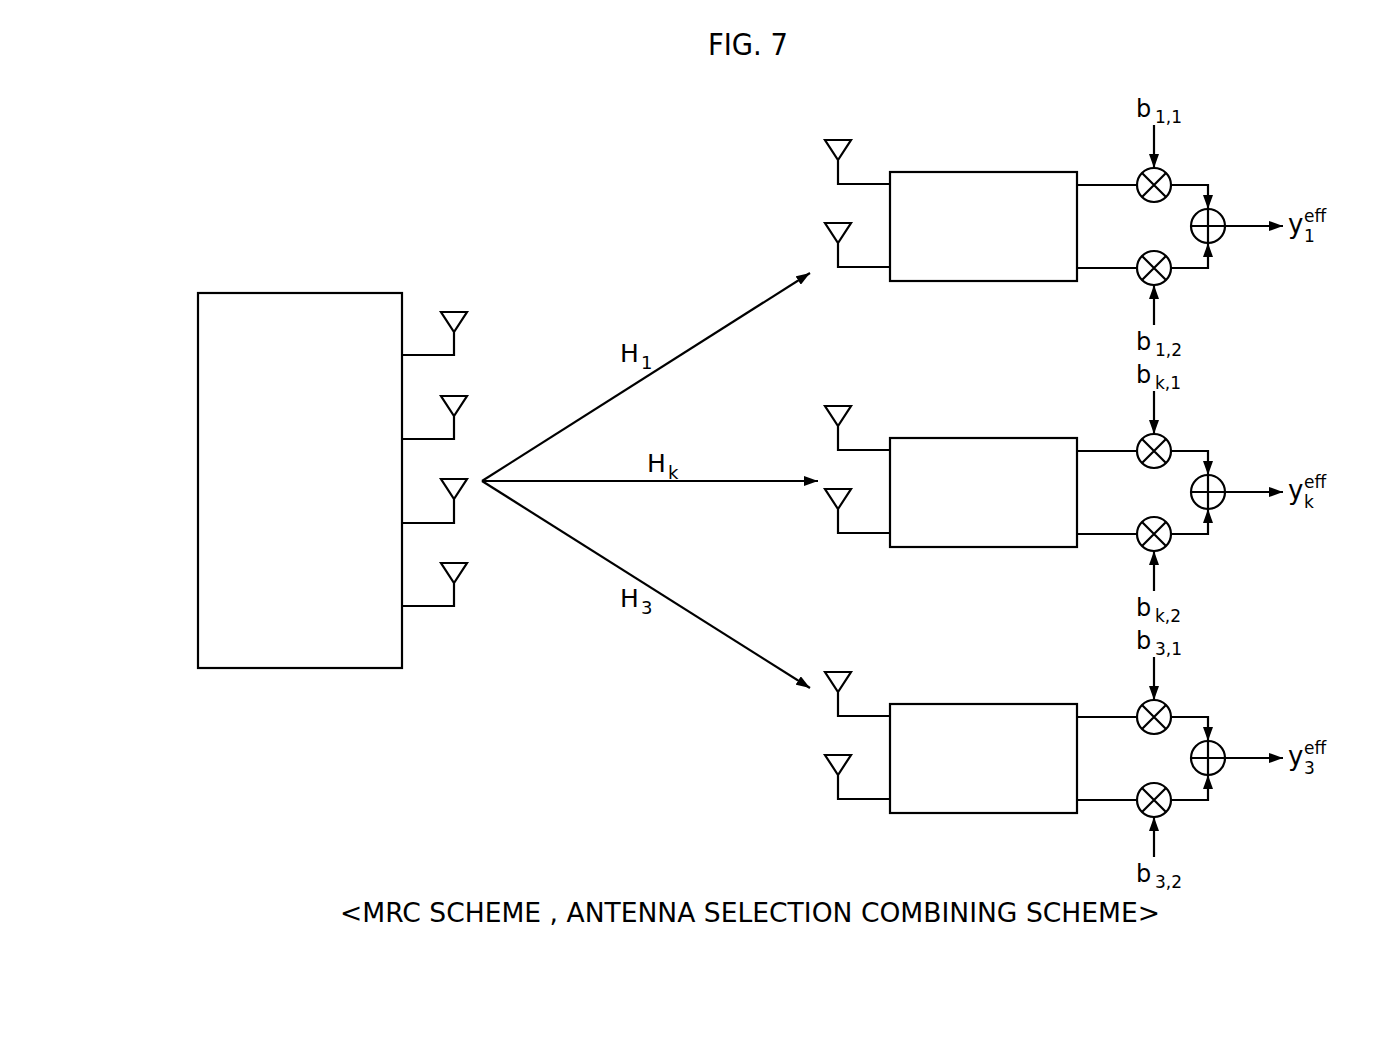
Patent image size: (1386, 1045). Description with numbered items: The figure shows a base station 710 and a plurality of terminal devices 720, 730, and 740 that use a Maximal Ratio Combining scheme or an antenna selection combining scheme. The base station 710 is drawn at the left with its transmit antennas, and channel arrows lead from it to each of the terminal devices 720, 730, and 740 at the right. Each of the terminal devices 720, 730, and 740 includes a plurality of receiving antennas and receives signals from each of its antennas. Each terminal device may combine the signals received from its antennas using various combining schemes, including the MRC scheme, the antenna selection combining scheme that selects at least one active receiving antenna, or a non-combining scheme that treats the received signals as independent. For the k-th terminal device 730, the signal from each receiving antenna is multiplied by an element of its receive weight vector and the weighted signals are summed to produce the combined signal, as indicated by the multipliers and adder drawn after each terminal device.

The base station 710 is at (298, 293).
The terminal device 720 is at (983, 172).
The terminal device 730 is at (983, 438).
The terminal device 740 is at (983, 704).